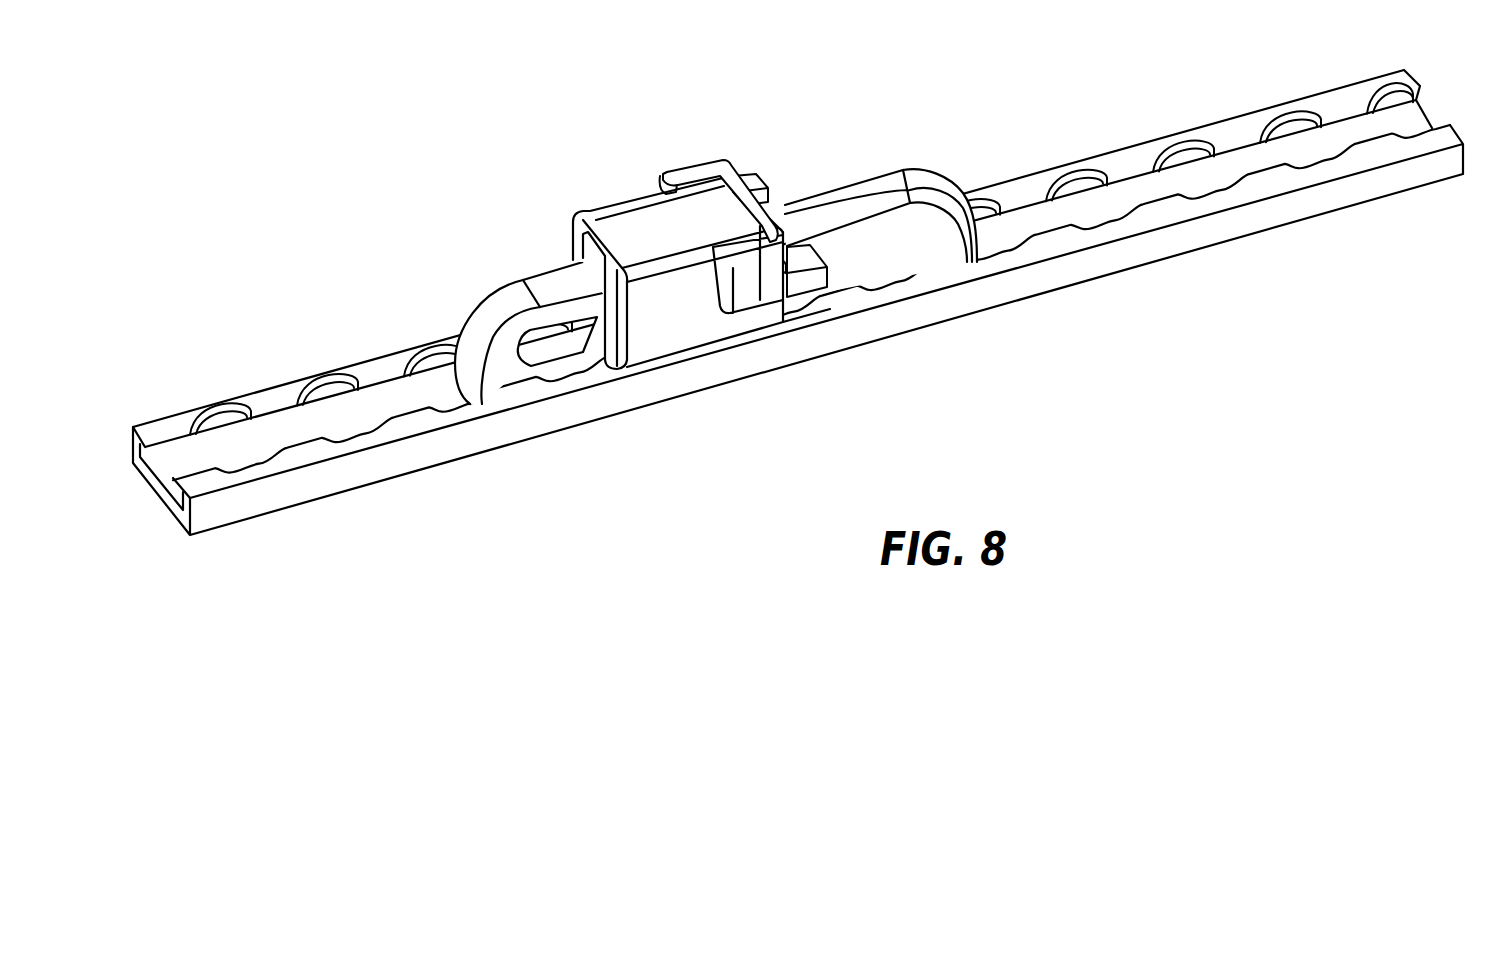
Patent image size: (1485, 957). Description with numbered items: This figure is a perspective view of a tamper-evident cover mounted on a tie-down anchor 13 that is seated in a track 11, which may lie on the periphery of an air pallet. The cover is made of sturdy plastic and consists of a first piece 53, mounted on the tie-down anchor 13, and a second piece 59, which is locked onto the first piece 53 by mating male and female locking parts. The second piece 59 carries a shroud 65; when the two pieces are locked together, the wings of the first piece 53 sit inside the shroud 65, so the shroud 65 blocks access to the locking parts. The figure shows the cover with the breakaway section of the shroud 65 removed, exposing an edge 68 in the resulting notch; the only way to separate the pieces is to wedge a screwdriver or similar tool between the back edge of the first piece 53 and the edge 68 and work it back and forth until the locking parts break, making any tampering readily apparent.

The track 11 is at (1023, 305).
The tie-down anchor 13 is at (512, 285).
The first piece 53 is at (603, 207).
The second piece 59 is at (849, 183).
The shroud 65 is at (696, 168).
The edge 68 is at (751, 176).